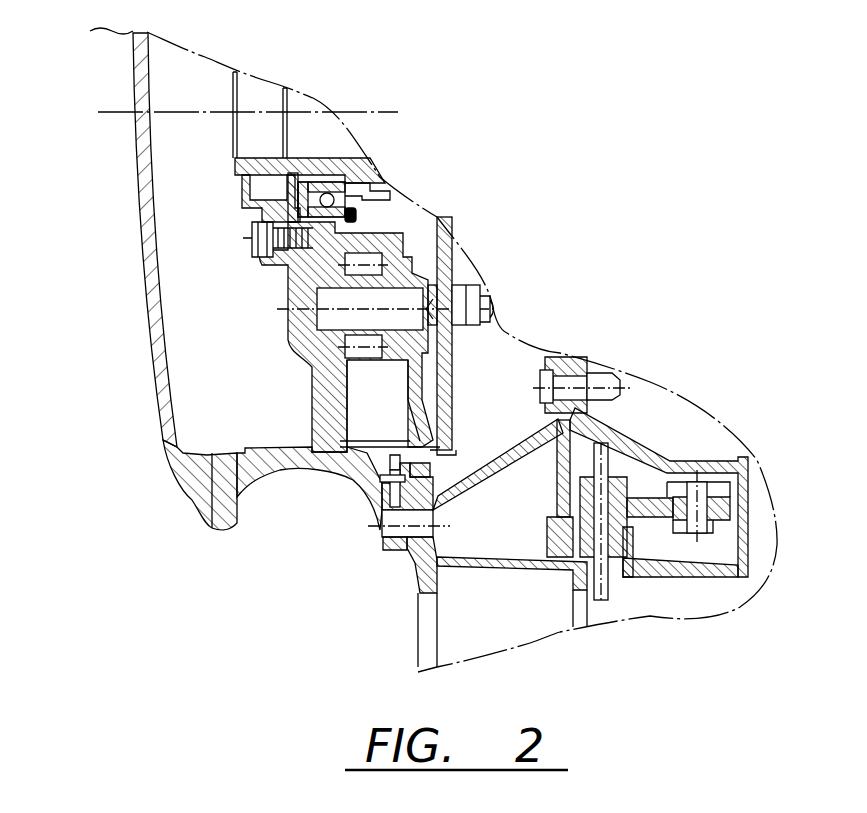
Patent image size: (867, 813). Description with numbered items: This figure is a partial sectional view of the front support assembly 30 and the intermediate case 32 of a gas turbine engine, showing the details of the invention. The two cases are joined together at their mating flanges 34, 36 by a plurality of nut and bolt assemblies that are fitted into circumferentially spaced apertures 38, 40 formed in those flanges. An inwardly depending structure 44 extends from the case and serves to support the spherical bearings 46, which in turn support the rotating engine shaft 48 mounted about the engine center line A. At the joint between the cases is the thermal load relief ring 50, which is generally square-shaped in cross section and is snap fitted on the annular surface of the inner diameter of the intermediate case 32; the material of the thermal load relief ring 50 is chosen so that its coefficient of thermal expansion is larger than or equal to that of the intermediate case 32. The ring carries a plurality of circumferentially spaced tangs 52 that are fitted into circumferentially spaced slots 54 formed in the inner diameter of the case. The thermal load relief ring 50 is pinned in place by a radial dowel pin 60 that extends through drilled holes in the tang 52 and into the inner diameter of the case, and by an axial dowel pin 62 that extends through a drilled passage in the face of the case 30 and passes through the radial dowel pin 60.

The engine center line A is at (217, 112).
The front support assembly 30 is at (246, 525).
The intermediate case 32 is at (462, 612).
The mating flange 34 is at (377, 503).
The mating flange 36 is at (470, 467).
The circumferentially spaced aperture 38 is at (382, 540).
The circumferentially spaced aperture 40 is at (450, 540).
The inwardly depending structure 44 is at (287, 283).
The spherical bearing 46 is at (345, 178).
The rotating engine shaft 48 is at (333, 130).
The thermal load relief ring 50 is at (430, 457).
The tang 52 is at (452, 395).
The slot 54 is at (375, 475).
The radial dowel pin 60 is at (397, 465).
The axial dowel pin 62 is at (380, 488).